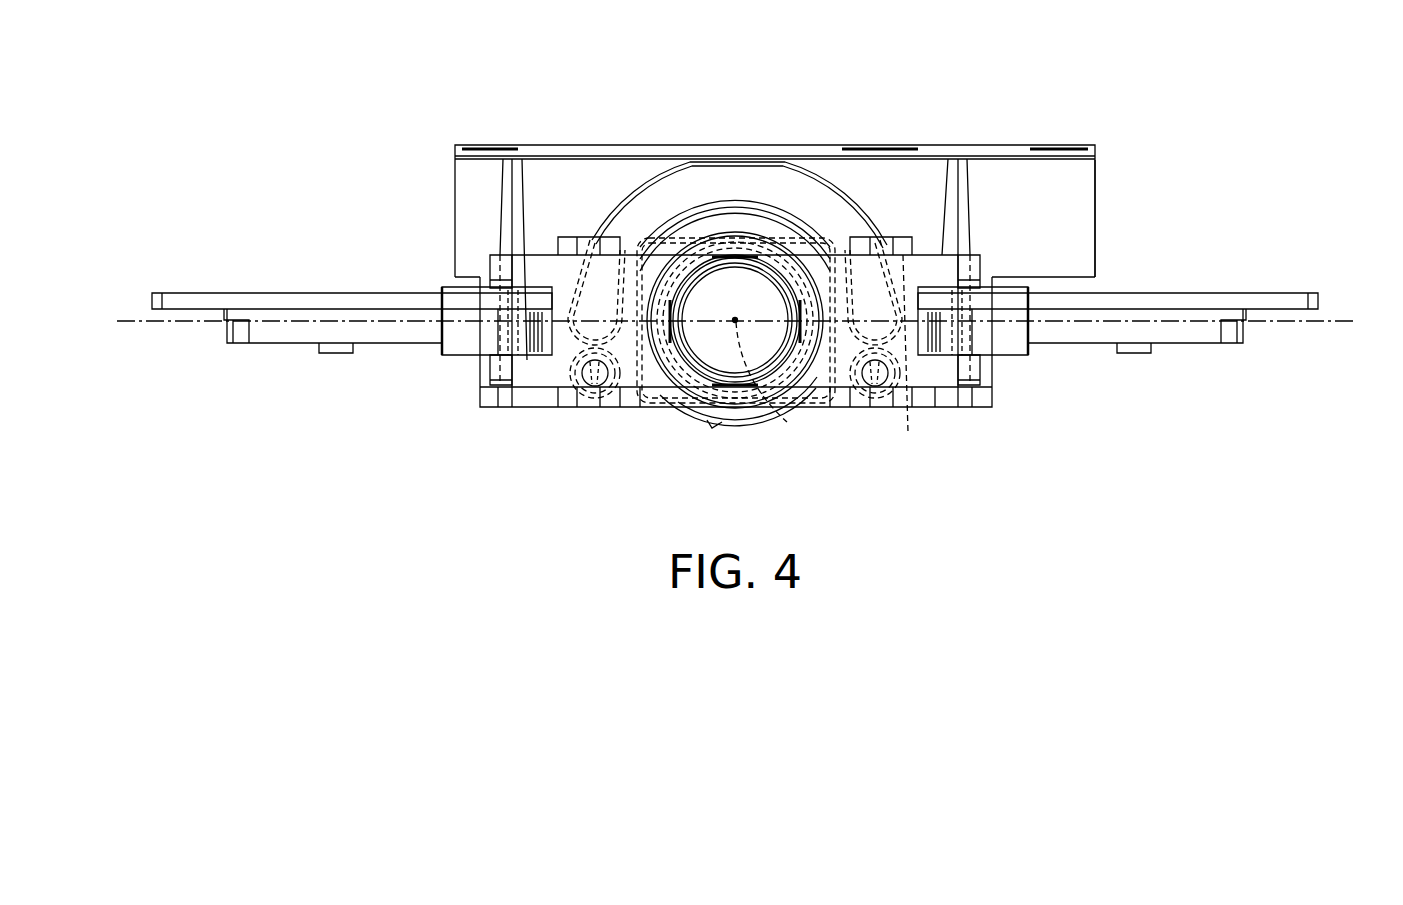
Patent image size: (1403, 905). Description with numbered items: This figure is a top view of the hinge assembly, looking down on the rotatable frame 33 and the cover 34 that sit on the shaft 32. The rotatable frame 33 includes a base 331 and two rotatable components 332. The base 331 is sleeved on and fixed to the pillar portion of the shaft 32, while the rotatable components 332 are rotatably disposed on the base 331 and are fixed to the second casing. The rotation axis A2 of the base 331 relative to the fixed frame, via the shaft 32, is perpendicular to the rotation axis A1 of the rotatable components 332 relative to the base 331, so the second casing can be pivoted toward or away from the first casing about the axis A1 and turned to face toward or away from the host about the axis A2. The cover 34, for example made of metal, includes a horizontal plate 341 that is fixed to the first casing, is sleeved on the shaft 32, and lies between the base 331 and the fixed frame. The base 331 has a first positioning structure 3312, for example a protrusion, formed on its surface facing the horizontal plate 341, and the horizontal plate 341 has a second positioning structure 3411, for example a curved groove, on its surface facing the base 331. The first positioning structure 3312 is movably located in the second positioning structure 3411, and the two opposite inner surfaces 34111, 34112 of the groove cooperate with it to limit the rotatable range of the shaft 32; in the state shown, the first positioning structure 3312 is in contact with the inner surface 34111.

The cover 34 is at (998, 142).
The horizontal plate 341 is at (1068, 200).
The second positioning structure 3411 is at (733, 183).
The inner surface 34111 is at (873, 333).
The inner surface 34112 is at (597, 333).
The rotatable frame 33 is at (1167, 357).
The base 331 is at (815, 405).
The first positioning structure 3312 is at (910, 356).
The rotatable component 332 is at (527, 360).
The shaft 32 is at (695, 377).
The rotation axis A1 is at (752, 322).
The rotation axis A2 is at (769, 385).